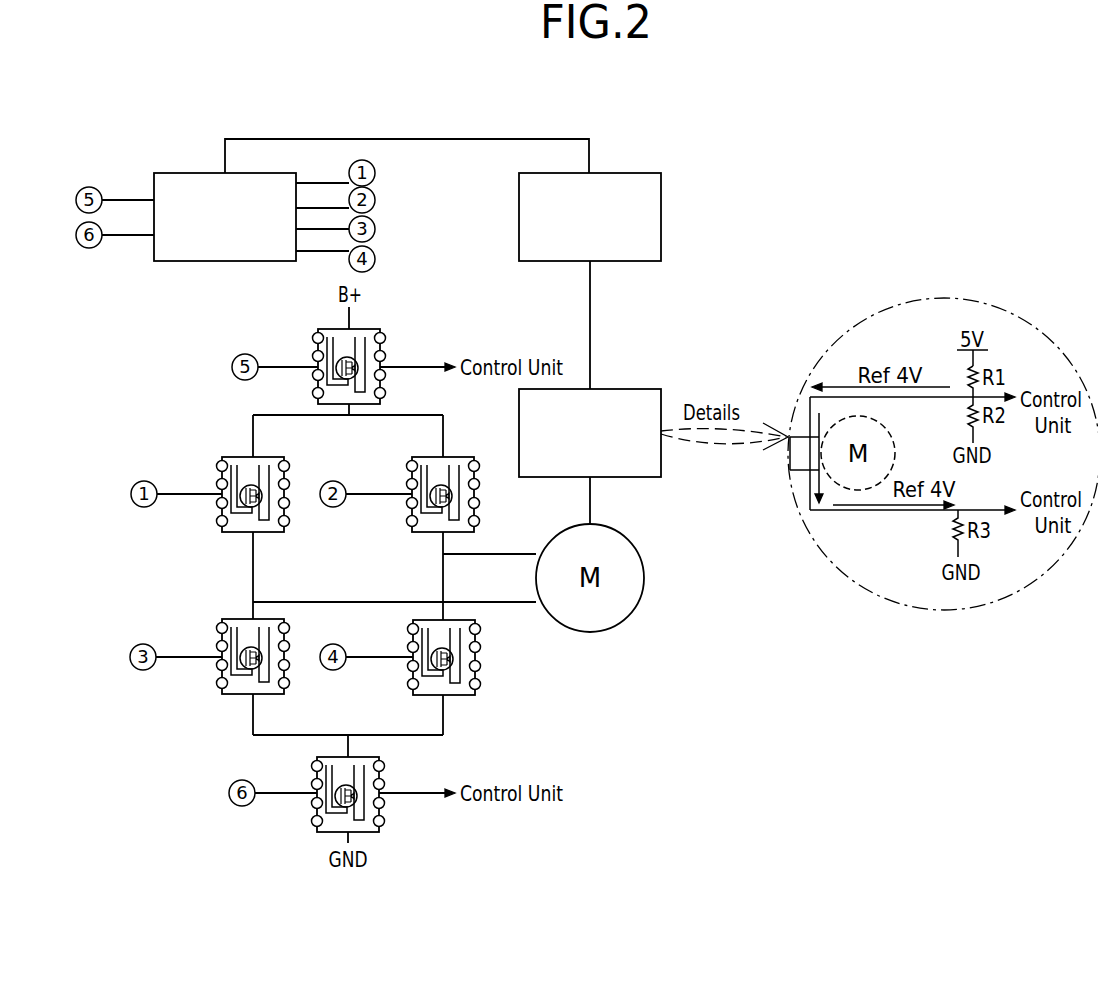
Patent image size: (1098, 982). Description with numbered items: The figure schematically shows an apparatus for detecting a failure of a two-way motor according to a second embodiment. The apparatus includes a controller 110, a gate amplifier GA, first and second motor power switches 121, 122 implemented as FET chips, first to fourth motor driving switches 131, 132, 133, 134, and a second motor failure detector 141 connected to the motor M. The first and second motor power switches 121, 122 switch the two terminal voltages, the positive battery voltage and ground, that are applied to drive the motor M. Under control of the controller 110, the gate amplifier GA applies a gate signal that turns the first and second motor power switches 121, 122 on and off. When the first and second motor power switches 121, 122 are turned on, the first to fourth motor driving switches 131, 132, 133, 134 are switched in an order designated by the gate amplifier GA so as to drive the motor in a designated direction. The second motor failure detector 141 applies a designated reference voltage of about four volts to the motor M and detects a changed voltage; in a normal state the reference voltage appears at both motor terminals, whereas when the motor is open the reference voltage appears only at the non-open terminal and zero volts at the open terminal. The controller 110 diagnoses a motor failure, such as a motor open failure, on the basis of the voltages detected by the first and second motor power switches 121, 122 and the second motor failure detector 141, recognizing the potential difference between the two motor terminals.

The gate amplifier GA is at (175, 172).
The controller 110 is at (633, 173).
The first motor power switch 121 is at (368, 328).
The second motor power switch 122 is at (372, 757).
The first motor driving switch 131 is at (274, 457).
The second motor driving switch 132 is at (273, 619).
The third motor driving switch 133 is at (462, 457).
The fourth motor driving switch 134 is at (462, 620).
The second motor failure detector 141 is at (632, 389).